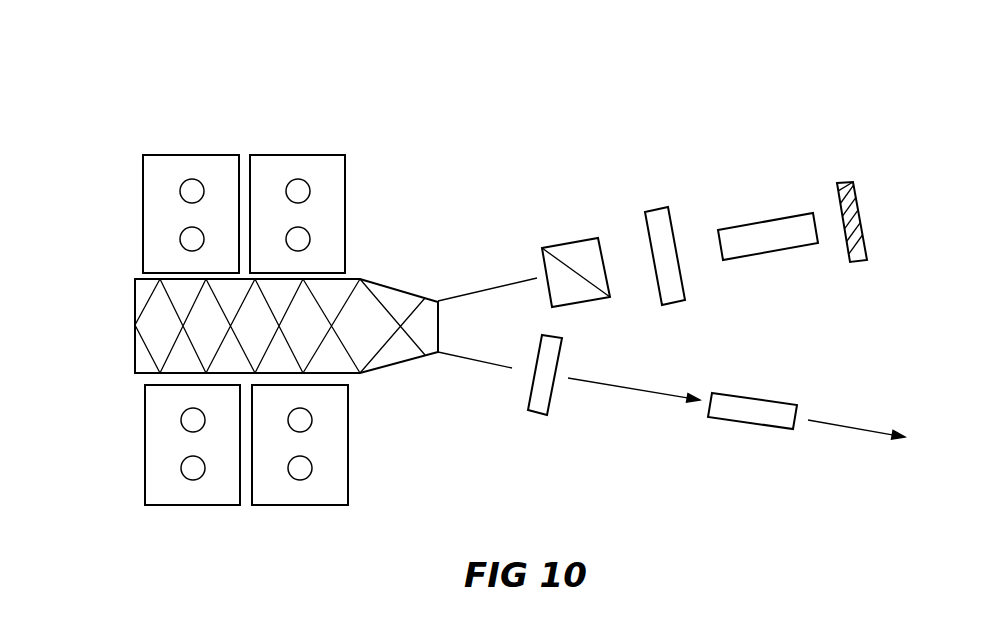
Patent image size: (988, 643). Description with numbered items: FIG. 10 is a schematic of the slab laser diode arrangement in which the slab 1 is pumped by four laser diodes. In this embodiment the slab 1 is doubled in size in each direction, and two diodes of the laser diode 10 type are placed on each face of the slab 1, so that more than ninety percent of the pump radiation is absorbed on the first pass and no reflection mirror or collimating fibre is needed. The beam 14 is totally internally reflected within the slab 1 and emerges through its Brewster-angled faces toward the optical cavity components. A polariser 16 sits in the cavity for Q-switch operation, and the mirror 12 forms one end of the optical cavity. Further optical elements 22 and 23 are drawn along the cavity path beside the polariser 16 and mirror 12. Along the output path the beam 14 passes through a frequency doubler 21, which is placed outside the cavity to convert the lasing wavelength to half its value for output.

The slab 1 is at (111, 301).
The laser diode 10 is at (188, 129).
The mirror 12 is at (837, 210).
The beam 14 is at (448, 293).
The polariser 16 is at (567, 242).
The frequency doubler 21 is at (758, 425).
The optical element 22 is at (768, 220).
The optical element 23 is at (657, 210).